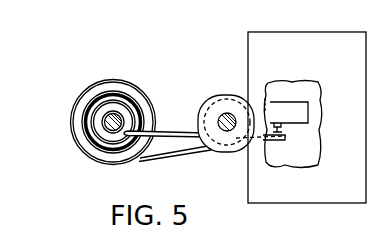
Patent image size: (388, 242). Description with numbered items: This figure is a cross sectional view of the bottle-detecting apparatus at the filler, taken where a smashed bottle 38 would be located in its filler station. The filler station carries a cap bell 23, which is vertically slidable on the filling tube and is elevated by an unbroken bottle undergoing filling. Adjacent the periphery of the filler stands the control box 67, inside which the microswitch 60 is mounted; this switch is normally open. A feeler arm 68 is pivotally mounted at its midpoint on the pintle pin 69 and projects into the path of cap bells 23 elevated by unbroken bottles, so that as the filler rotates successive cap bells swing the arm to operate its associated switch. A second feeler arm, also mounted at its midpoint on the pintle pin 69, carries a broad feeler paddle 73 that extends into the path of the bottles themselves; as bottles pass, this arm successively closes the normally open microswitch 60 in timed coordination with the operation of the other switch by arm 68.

The cap bell 23 is at (98, 116).
The smashed bottle 38 is at (159, 81).
The microswitch 60 is at (298, 110).
The control box 67 is at (320, 42).
The feeler arm 68 is at (158, 129).
The pintle pin 69 is at (228, 115).
The feeler paddle 73 is at (181, 152).